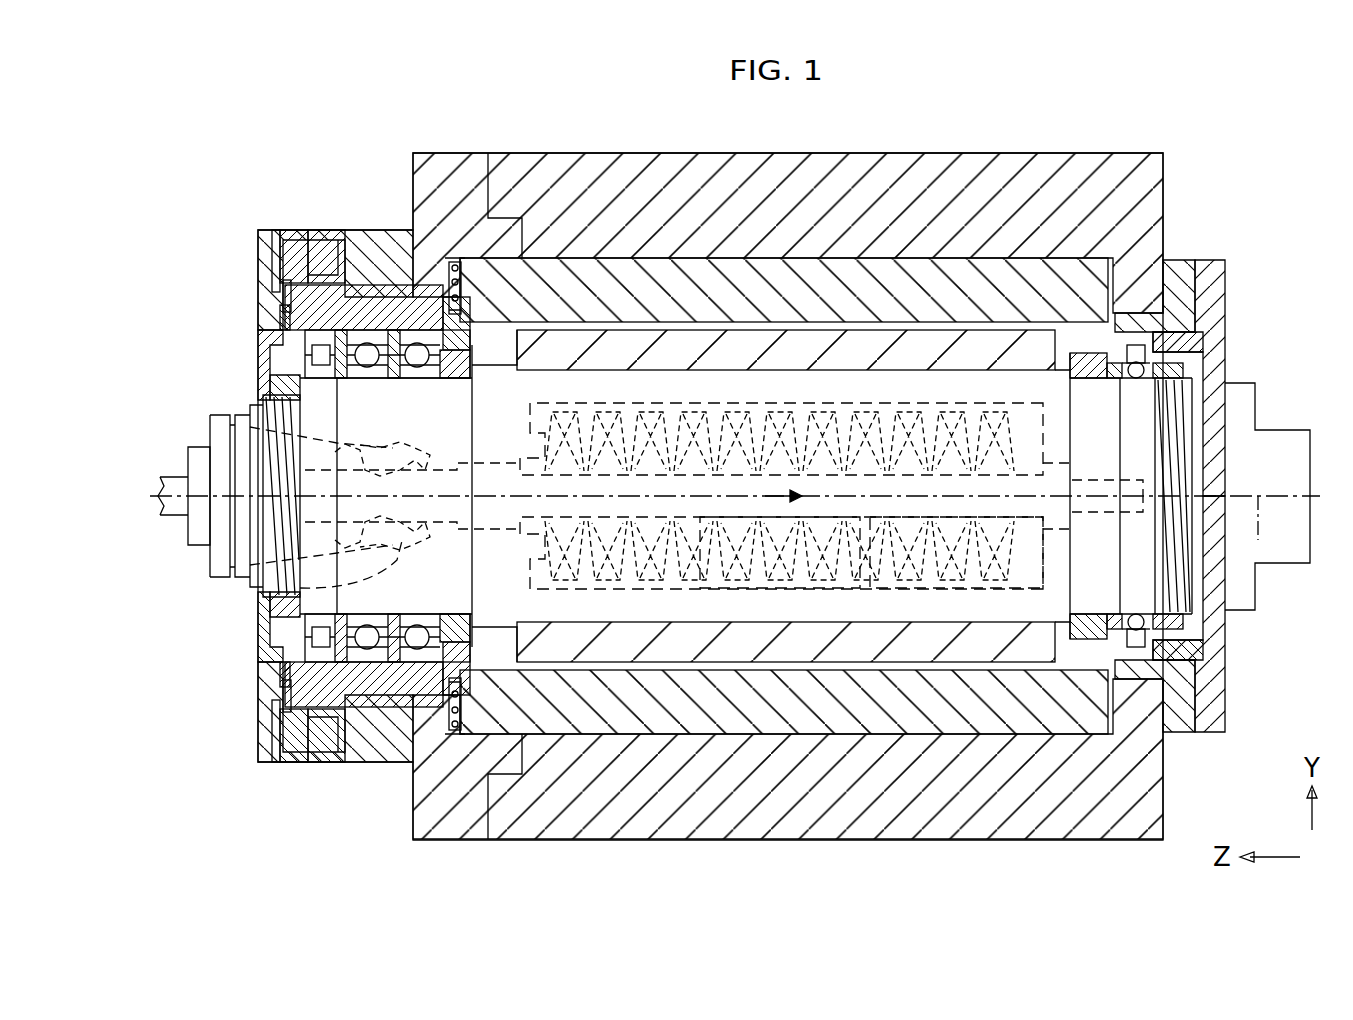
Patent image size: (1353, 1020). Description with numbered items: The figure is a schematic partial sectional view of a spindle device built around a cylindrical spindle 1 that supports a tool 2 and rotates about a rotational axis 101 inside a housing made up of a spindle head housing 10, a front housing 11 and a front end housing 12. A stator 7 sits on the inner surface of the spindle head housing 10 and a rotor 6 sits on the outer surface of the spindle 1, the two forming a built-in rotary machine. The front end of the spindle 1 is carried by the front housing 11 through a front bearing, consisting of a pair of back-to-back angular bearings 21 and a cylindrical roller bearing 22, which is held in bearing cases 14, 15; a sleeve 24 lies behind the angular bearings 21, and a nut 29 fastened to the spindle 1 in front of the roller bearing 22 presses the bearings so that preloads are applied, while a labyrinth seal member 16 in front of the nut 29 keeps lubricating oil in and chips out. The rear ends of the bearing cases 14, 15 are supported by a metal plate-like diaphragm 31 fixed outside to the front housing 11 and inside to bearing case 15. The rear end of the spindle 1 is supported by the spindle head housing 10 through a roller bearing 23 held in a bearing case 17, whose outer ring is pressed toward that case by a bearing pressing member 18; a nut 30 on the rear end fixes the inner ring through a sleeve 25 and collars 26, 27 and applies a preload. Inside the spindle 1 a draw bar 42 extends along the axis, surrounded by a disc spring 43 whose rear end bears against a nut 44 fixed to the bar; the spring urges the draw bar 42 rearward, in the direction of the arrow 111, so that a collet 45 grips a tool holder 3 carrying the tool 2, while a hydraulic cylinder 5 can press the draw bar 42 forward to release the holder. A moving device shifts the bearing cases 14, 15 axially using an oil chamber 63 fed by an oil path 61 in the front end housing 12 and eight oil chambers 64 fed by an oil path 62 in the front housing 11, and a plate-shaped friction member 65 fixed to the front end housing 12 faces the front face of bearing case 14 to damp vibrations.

The spindle 1 is at (1035, 392).
The tool 2 is at (178, 480).
The tool holder 3 is at (220, 415).
The hydraulic cylinder 5 is at (1275, 425).
The rotor 6 is at (1000, 345).
The stator 7 is at (912, 275).
The spindle head housing 10 is at (710, 160).
The front housing 11 is at (452, 162).
The front end housing 12 is at (265, 262).
The bearing case 14 is at (372, 300).
The bearing case 15 is at (452, 300).
The seal member 16 is at (262, 352).
The bearing case 17 is at (1178, 292).
The bearing pressing member 18 is at (1215, 285).
The angular bearing 21 is at (412, 660).
The roller bearing 22 is at (319, 648).
The roller bearing 23 is at (1146, 640).
The sleeve 24 is at (470, 364).
The sleeve 25 is at (1088, 640).
The collar 26 is at (1114, 630).
The collar 27 is at (1165, 612).
The nut 29 is at (278, 388).
The nut 30 is at (1178, 368).
The diaphragm 31 is at (462, 262).
The draw bar 42 is at (735, 600).
The disc spring 43 is at (790, 600).
The nut 44 is at (1000, 600).
The collet 45 is at (258, 585).
The oil path 61 is at (276, 236).
The oil path 62 is at (328, 275).
The oil chamber 63 is at (284, 294).
The oil chamber 64 is at (294, 282).
The friction member 65 is at (282, 316).
The rotational axis 101 is at (1258, 540).
The arrow 111 is at (776, 488).